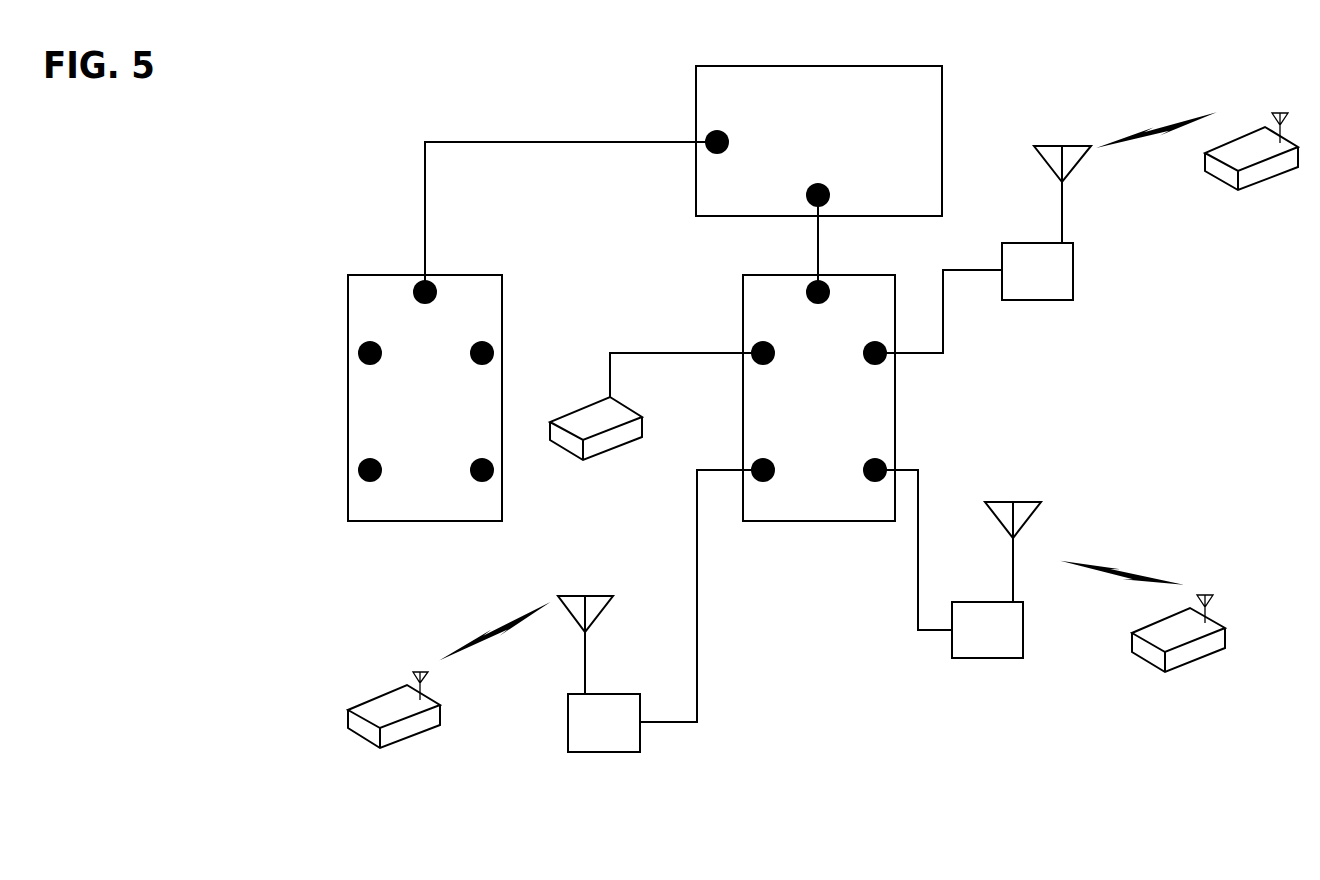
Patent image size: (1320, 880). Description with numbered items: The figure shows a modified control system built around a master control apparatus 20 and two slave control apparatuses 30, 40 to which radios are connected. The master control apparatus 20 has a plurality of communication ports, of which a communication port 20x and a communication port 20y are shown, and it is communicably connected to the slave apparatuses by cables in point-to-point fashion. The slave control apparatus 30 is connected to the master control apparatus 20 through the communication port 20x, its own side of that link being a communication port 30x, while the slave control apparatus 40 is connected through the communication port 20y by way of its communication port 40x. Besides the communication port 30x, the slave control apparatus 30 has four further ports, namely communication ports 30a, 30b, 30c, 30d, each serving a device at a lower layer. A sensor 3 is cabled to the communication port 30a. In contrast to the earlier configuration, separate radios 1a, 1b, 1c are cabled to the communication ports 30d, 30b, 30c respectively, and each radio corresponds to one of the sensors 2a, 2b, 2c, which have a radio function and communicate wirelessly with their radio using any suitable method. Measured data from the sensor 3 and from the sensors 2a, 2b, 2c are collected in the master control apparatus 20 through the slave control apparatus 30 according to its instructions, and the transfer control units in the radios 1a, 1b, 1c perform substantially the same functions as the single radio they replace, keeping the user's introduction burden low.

The master control apparatus 20 is at (696, 85).
The communication port 20x is at (817, 182).
The communication port 20y is at (737, 142).
The slave control apparatus 30 is at (742, 297).
The communication port 30x is at (817, 304).
The communication port 30a is at (773, 365).
The communication port 30b is at (773, 482).
The communication port 30c is at (864, 365).
The communication port 30d is at (863, 482).
The slave control apparatus 40 is at (392, 275).
The communication port 40x is at (426, 304).
The sensor 3 is at (615, 450).
The radio 1a is at (990, 658).
The radio 1b is at (610, 752).
The radio 1c is at (1040, 300).
The sensor 2a is at (1195, 662).
The sensor 2b is at (412, 738).
The sensor 2c is at (1252, 128).